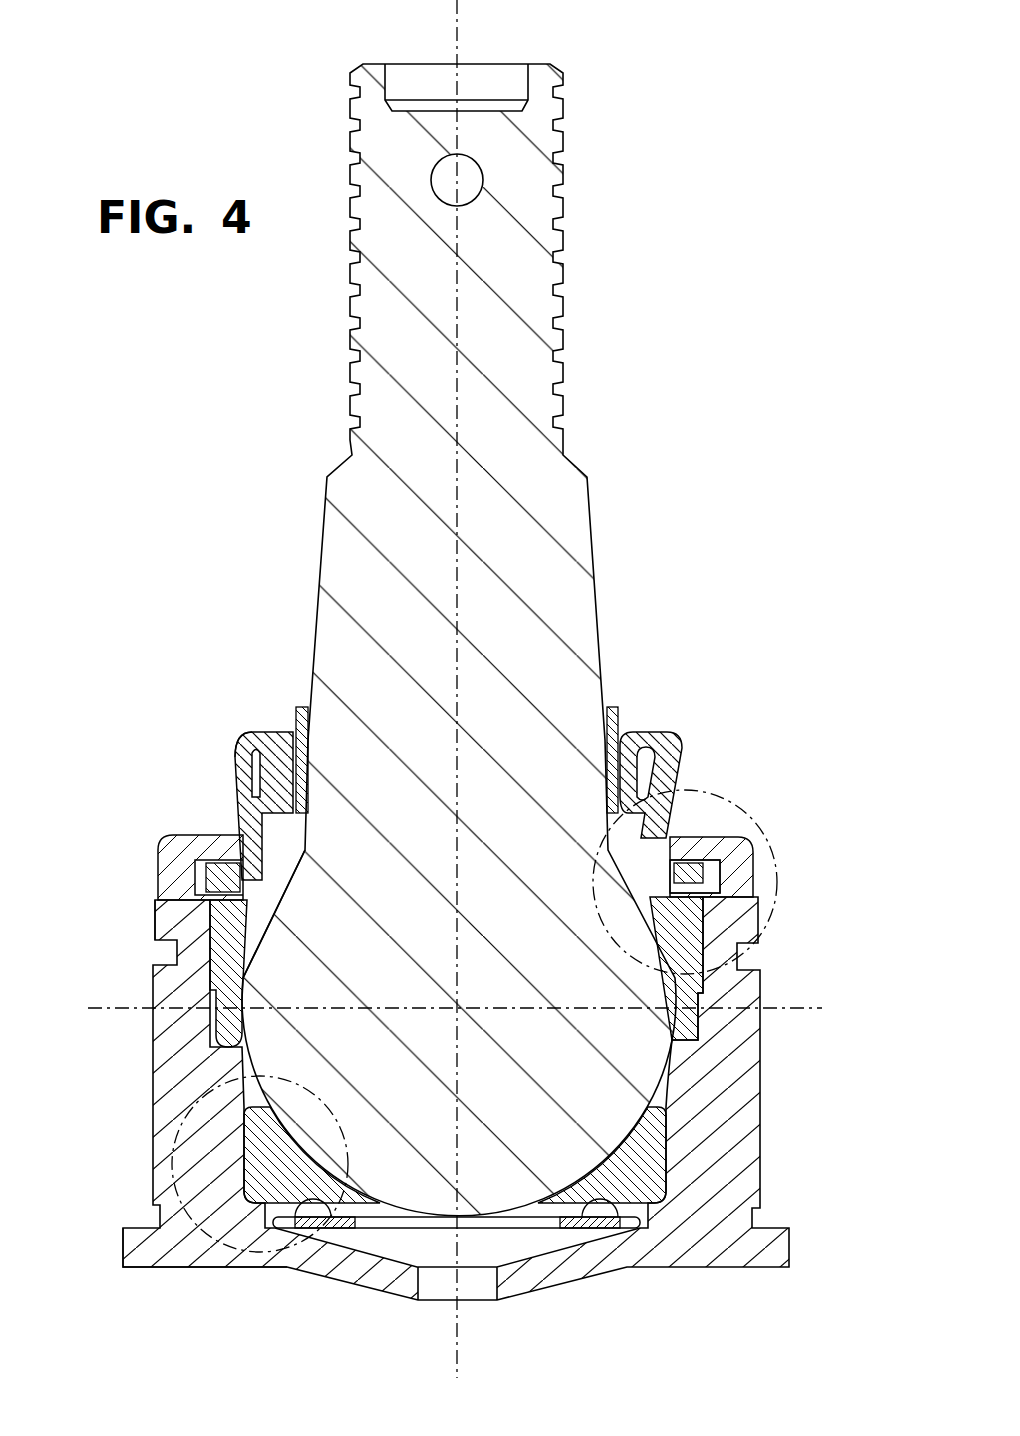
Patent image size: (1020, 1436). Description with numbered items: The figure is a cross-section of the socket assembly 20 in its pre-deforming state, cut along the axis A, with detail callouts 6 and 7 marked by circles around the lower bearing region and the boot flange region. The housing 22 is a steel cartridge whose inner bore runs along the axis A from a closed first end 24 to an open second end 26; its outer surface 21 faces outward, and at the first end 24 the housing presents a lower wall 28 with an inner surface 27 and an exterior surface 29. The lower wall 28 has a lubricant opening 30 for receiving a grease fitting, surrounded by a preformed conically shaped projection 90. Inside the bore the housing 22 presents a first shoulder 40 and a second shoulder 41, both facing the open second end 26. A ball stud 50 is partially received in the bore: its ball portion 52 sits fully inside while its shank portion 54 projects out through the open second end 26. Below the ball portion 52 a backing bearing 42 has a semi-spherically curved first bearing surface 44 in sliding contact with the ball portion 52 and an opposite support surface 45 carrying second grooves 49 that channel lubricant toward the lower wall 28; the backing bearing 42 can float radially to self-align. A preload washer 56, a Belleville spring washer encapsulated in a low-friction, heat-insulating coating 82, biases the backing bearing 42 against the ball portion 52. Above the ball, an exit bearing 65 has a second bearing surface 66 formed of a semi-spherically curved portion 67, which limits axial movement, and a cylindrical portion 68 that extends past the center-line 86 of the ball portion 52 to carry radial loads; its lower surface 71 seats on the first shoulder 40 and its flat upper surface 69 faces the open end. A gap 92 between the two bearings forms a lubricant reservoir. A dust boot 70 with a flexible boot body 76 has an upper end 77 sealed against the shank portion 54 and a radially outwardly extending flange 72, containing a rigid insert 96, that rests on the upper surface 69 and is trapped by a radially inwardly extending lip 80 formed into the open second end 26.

The axis A is at (470, 26).
The socket assembly 20 is at (625, 267).
The outer surface of the housing 21 is at (153, 923).
The housing 22 is at (412, 1131).
The first end 24 is at (397, 1257).
The second end 26 is at (744, 833).
The inner surface 27 is at (205, 1247).
The lower wall 28 is at (325, 1258).
The exterior surface 29 is at (528, 1288).
The lubricant opening 30 is at (497, 1285).
The first shoulder 40 is at (146, 1005).
The second shoulder 41 is at (210, 875).
The backing bearing 42 is at (454, 1210).
The first bearing surface 44 is at (588, 1170).
The support surface 45 is at (277, 1213).
The second grooves 49 is at (473, 1261).
The ball stud 50 is at (487, 640).
The ball portion 52 is at (643, 1057).
The shank portion 54 is at (377, 597).
The preload washer 56 is at (596, 1212).
The exit bearing 65 is at (702, 900).
The second bearing surface 66 is at (243, 945).
The semi-spherically curved portion 67 is at (257, 920).
The cylindrical portion 68 is at (242, 1036).
The upper surface 69 is at (247, 803).
The dust boot 70 is at (488, 758).
The lower surface 71 is at (238, 1042).
The radially outwardly extending flange 72 is at (712, 876).
The boot body 76 is at (680, 752).
The upper end 77 is at (619, 713).
The radially inwardly extending lip 80 is at (171, 831).
The outer coating 82 is at (285, 1235).
The center-line 86 is at (805, 1006).
The conically shaped projection 90 is at (362, 1287).
The gap 92 is at (660, 1093).
The insert 96 is at (650, 887).
The detail region of FIG. 6 is at (172, 1160).
The detail region of FIG. 7 is at (800, 857).